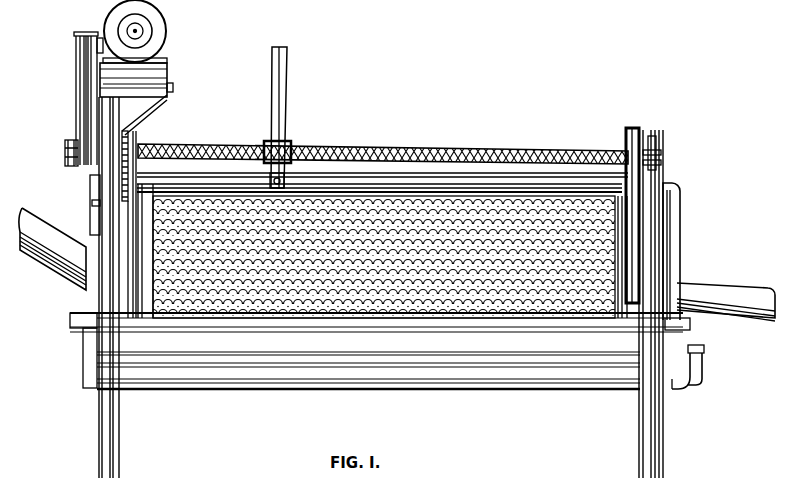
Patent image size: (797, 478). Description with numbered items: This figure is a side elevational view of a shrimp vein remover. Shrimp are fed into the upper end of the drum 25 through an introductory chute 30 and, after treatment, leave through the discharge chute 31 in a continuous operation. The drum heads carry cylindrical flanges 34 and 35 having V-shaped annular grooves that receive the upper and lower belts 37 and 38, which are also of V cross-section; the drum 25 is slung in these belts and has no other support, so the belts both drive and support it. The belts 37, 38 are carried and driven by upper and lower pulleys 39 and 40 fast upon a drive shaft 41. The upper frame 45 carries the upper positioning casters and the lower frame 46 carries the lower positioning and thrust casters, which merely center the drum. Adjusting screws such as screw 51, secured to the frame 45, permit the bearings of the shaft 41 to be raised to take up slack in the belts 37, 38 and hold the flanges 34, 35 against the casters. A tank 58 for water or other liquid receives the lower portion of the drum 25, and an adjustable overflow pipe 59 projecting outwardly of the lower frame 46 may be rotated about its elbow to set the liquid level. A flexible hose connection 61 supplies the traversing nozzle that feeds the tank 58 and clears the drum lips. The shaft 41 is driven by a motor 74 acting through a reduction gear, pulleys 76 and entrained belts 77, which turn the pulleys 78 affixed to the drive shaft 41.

The drum 25 is at (459, 173).
The introductory chute 30 is at (49, 258).
The discharge chute 31 is at (757, 320).
The cylindrical flange 34 is at (122, 235).
The cylindrical flange 35 is at (613, 197).
The upper belt 37 is at (133, 280).
The lower belt 38 is at (628, 262).
The upper pulley 39 is at (140, 137).
The lower pulley 40 is at (626, 135).
The drive shaft 41 is at (370, 148).
The upper frame 45 is at (112, 447).
The lower frame 46 is at (661, 433).
The adjusting screw 51 is at (655, 140).
The tank 58 is at (377, 392).
The adjustable overflow pipe 59 is at (703, 360).
The flexible hose connection 61 is at (288, 66).
The motor 74 is at (168, 40).
The pulleys 76 is at (75, 45).
The belts 77 is at (82, 100).
The pulleys 78 is at (76, 163).